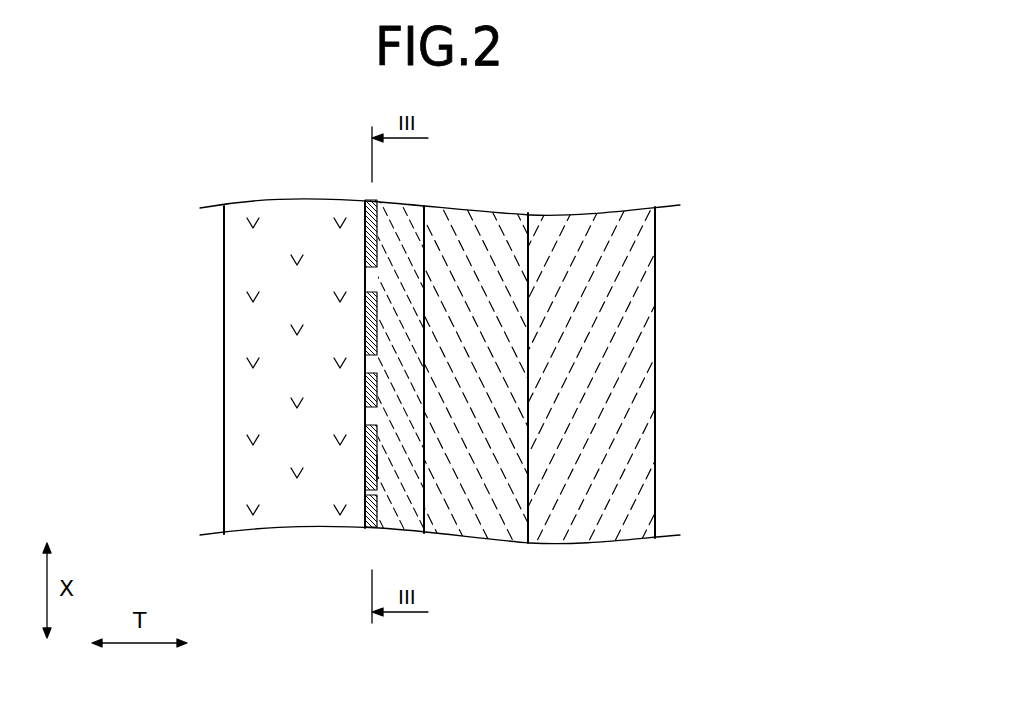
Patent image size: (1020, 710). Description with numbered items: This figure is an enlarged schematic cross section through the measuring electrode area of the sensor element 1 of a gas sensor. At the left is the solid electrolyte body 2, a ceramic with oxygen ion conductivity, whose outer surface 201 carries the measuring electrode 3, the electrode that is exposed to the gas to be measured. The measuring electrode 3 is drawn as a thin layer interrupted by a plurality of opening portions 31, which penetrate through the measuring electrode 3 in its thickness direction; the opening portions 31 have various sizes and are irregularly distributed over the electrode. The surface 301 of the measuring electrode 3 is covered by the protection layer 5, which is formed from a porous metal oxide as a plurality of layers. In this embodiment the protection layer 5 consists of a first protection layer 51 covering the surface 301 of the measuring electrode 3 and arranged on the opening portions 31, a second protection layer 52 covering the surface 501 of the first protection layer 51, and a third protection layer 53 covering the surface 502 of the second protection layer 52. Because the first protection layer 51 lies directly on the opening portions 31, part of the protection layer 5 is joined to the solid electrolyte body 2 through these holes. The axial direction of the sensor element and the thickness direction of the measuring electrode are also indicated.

The sensor element 1 is at (652, 173).
The solid electrolyte body 2 is at (265, 405).
The outer surface 201 is at (365, 442).
The measuring electrode 3 is at (363, 240).
The opening portions 31 is at (370, 268).
The surface of the measuring electrode 301 is at (381, 467).
The protection layer 5 is at (513, 375).
The first protection layer 51 is at (410, 287).
The second protection layer 52 is at (473, 370).
The third protection layer 53 is at (760, 263).
The surface of the first protection layer 501 is at (427, 465).
The surface of the second protection layer 502 is at (530, 455).